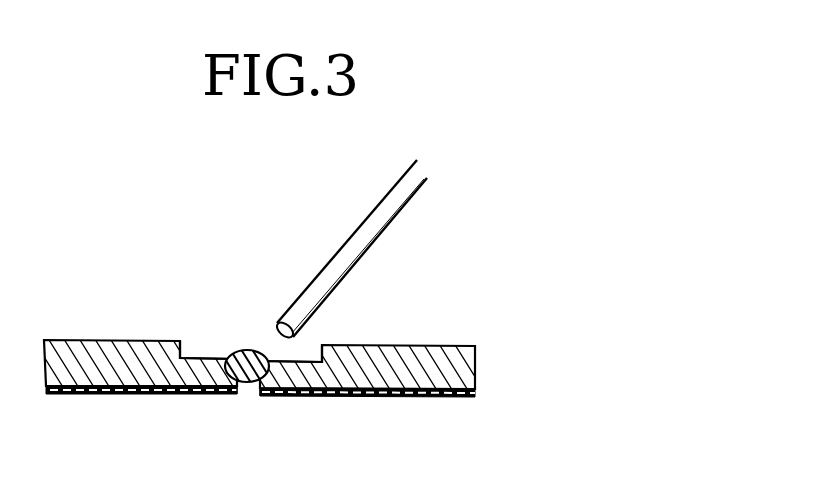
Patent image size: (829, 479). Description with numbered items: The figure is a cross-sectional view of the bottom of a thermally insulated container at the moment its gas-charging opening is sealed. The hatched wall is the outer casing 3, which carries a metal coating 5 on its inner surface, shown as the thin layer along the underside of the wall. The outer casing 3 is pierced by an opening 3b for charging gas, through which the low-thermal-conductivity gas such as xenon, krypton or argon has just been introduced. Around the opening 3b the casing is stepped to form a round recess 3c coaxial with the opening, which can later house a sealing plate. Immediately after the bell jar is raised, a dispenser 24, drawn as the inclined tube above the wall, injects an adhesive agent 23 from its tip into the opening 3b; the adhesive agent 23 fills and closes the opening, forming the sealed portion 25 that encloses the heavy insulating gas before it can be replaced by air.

The outer casing 3 is at (110, 357).
The opening for charging gas 3b is at (248, 389).
The round recess 3c is at (318, 344).
The metal coating 5 is at (108, 395).
The adhesive agent 23 is at (252, 351).
The dispenser 24 is at (376, 244).
The sealed portion 25 is at (200, 352).